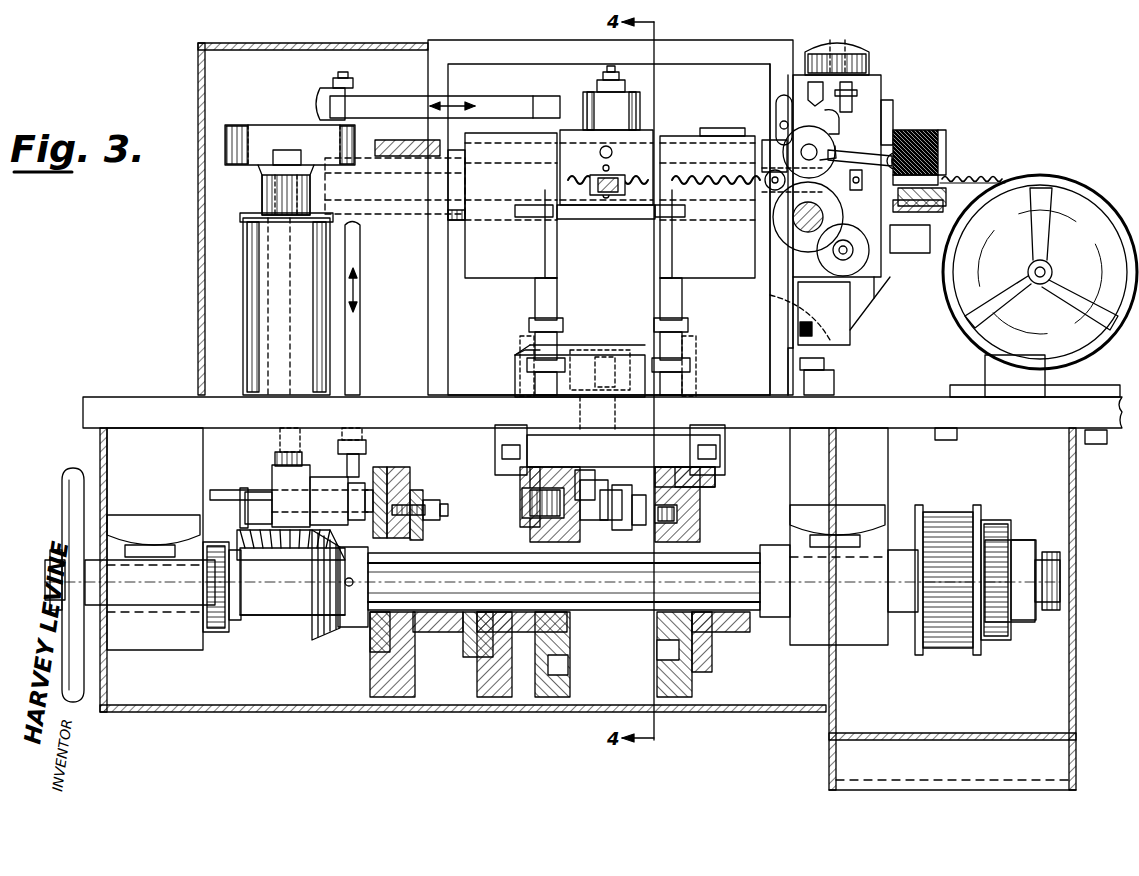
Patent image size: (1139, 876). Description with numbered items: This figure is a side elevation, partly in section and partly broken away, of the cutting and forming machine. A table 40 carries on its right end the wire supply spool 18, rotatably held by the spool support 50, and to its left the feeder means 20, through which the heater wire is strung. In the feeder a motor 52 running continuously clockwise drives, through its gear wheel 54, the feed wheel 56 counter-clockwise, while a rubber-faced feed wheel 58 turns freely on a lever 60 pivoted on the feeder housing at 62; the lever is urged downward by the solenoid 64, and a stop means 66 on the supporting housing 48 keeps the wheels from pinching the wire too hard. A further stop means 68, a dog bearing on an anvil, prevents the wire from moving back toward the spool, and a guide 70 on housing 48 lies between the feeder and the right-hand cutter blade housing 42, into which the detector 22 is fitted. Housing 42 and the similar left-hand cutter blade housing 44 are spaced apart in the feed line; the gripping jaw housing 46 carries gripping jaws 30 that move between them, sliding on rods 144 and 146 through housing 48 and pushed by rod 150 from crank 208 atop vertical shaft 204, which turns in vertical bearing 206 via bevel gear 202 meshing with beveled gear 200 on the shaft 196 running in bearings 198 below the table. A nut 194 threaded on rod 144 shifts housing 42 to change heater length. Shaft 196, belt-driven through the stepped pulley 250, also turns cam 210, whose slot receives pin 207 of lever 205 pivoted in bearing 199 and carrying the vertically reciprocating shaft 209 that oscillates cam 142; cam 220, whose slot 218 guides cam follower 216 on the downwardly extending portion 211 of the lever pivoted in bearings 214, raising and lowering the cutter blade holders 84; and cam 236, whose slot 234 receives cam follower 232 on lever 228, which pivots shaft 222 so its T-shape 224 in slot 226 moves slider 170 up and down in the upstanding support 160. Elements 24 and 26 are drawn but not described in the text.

The wire supply spool 18 is at (1078, 186).
The feeder means 20 is at (881, 95).
The detector 22 is at (688, 130).
The guide 24 is at (660, 232).
The guide 26 is at (552, 222).
The gripping jaws 30 is at (606, 212).
The table 40 is at (146, 397).
The right-hand cutter blade housing 42 is at (712, 295).
The left-hand cutter blade housing 44 is at (511, 221).
The gripping jaw housing 46 is at (646, 128).
The supporting housing 48 is at (788, 325).
The spool support 50 is at (985, 362).
The motor 52 is at (868, 304).
The gear wheel 54 is at (848, 266).
The feed wheel 56 is at (843, 212).
The rubber-faced feed wheel 58 is at (838, 126).
The lever 60 is at (895, 130).
The lever pivot 62 is at (940, 158).
The solenoid 64 is at (870, 65).
The stop means 66 is at (776, 144).
The stop means 68 is at (840, 144).
The guide 70 is at (755, 218).
The cutter blade holders 84 is at (557, 278).
The cam 142 is at (448, 196).
The upper rod 144 is at (400, 138).
The lower rod 146 is at (450, 222).
The crank rod 150 is at (524, 96).
The upstanding support 160 is at (640, 348).
The slider 170 is at (568, 366).
The nut 194 is at (938, 133).
The shaft 196 is at (285, 610).
The bearings 198 is at (170, 653).
The bearing 199 is at (276, 478).
The beveled gear 200 is at (334, 630).
The bevel gear 202 is at (250, 534).
The vertical shaft 204 is at (262, 190).
The lever 205 is at (333, 473).
The vertical bearing 206 is at (262, 268).
The pin 207 is at (380, 485).
The crank 208 is at (279, 125).
The vertically reciprocating shaft 209 is at (362, 312).
The cam 210 is at (410, 470).
The downwardly extending portion 211 is at (650, 450).
The bearings 214 is at (496, 462).
The cam follower 216 is at (710, 492).
The slot 218 is at (660, 662).
The cam 220 is at (700, 690).
The shaft 222 is at (605, 432).
The T-shape 224 is at (605, 355).
The slot 226 is at (628, 395).
The lever 228 is at (582, 472).
The cam follower 232 is at (545, 500).
The slot 234 is at (556, 665).
The cam 236 is at (568, 640).
The stepped pulley 250 is at (984, 516).